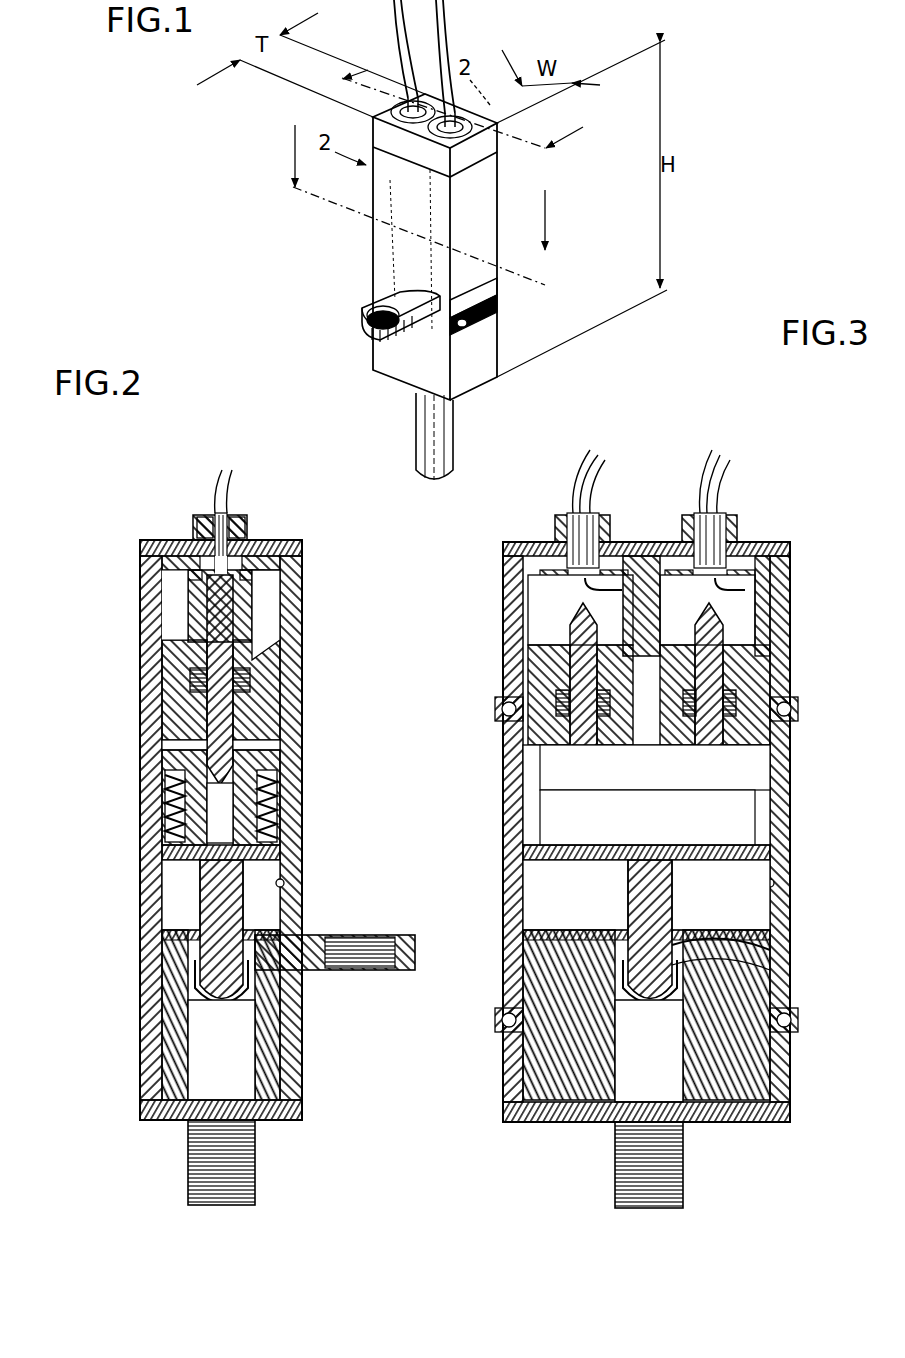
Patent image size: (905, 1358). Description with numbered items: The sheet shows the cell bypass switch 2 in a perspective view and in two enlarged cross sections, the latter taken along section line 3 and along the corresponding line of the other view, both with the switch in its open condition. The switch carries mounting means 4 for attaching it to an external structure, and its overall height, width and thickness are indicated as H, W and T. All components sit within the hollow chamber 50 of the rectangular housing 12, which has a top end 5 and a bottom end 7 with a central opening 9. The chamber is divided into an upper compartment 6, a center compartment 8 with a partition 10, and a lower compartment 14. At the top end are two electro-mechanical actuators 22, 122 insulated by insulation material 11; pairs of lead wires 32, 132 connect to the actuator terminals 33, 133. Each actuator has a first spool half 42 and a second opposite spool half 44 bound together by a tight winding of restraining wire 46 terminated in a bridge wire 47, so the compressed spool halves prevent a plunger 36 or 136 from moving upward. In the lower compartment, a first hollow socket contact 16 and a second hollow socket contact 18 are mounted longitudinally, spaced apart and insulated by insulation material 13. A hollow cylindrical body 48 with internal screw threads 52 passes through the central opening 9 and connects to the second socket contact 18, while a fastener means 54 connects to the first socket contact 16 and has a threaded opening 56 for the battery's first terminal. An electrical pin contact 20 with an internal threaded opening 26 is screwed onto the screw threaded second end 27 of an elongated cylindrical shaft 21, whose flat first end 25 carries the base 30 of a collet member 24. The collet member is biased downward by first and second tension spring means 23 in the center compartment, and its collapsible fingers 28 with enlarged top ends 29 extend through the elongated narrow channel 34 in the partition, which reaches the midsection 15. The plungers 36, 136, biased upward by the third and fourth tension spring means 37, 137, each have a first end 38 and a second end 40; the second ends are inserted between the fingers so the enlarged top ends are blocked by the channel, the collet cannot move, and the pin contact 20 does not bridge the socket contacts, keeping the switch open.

In FIG. 1, the cell bypass switch 2 is at (296, 246).
In FIG. 2, the cell bypass switch 2 is at (190, 480).
In FIG. 3, the cell bypass switch 2 is at (812, 395).
In FIG. 1, the section line 3— 3 is at (468, 97).
In FIG. 1, the mounting means 4 is at (458, 340).
In FIG. 2, the top end 5 is at (252, 545).
In FIG. 3, the top end 5 is at (660, 545).
In FIG. 2, the upper compartment 6 is at (283, 590).
In FIG. 3, the upper compartment 6 is at (775, 590).
In FIG. 2, the bottom end 7 is at (285, 1122).
In FIG. 3, the bottom end 7 is at (775, 1122).
In FIG. 2, the center compartment 8 is at (165, 762).
In FIG. 3, the center compartment 8 is at (533, 805).
In FIG. 2, the central opening 9 is at (258, 1122).
In FIG. 3, the central opening 9 is at (688, 1125).
In FIG. 2, the partition 10 is at (270, 760).
In FIG. 3, the partition 10 is at (760, 812).
In FIG. 2, the insulation material 11 is at (175, 700).
In FIG. 3, the insulation material 11 is at (560, 695).
In FIG. 2, the housing 12 is at (304, 615).
In FIG. 3, the housing 12 is at (793, 612).
In FIG. 2, the insulation material 13 is at (290, 1065).
In FIG. 3, the insulation material 13 is at (540, 1085).
In FIG. 2, the lower compartment 14 is at (300, 883).
In FIG. 3, the lower compartment 14 is at (790, 880).
In FIG. 2, the midsection 15 is at (175, 835).
In FIG. 2, the first hollow socket contact 16 is at (180, 970).
In FIG. 3, the first hollow socket contact 16 is at (770, 960).
In FIG. 2, the second hollow socket contact 18 is at (180, 1065).
In FIG. 3, the second hollow socket contact 18 is at (760, 1050).
In FIG. 2, the electrical pin contact 20 is at (280, 985).
In FIG. 3, the electrical pin contact 20 is at (672, 1005).
In FIG. 2, the elongated cylindrical shaft 21 is at (200, 892).
In FIG. 3, the elongated cylindrical shaft 21 is at (665, 905).
In FIG. 2, the electro-mechanical actuator 22 is at (255, 518).
In FIG. 3, the electro-mechanical actuator 22 is at (612, 520).
In FIG. 2, the first and second tension spring means 23 is at (185, 800).
In FIG. 2, the collet member 24 is at (170, 828).
In FIG. 3, the collet member 24 is at (770, 835).
In FIG. 2, the flat first end 25 is at (170, 855).
In FIG. 3, the flat first end 25 is at (530, 855).
In FIG. 2, the internal threaded opening 26 is at (232, 1003).
In FIG. 3, the internal threaded opening 26 is at (640, 960).
In FIG. 2, the screw threaded second end 27 is at (232, 920).
In FIG. 3, the screw threaded second end 27 is at (670, 925).
In FIG. 2, the collapsible fingers 28 is at (221, 813).
In FIG. 3, the collapsible fingers 28 is at (630, 822).
In FIG. 3, the enlarged top ends 29 is at (560, 750).
In FIG. 2, the base 30 is at (275, 852).
In FIG. 3, the base 30 is at (720, 845).
In FIG. 2, the lead wires 32 is at (222, 495).
In FIG. 3, the lead wires 32 is at (588, 480).
In FIG. 2, the electro-mechanical actuator terminals 33 is at (205, 525).
In FIG. 3, the electro-mechanical actuator terminals 33 is at (562, 545).
In FIG. 2, the elongated narrow channel 34 is at (170, 785).
In FIG. 2, the plunger 36 is at (205, 660).
In FIG. 3, the plunger 36 is at (568, 665).
In FIG. 2, the third tension spring means 37 is at (255, 685).
In FIG. 3, the third tension spring means 37 is at (556, 708).
In FIG. 2, the first end 38 is at (188, 600).
In FIG. 3, the first end 38 is at (585, 605).
In FIG. 2, the second end 40 is at (190, 722).
In FIG. 3, the second end 40 is at (560, 775).
In FIG. 2, the first spool half 42 is at (192, 542).
In FIG. 3, the first spool half 42 is at (555, 548).
In FIG. 2, the second opposite spool half 44 is at (262, 555).
In FIG. 3, the second opposite spool half 44 is at (775, 600).
In FIG. 2, the restraining wire 46 is at (270, 572).
In FIG. 3, the restraining wire 46 is at (560, 550).
In FIG. 3, the bridge wire 47 is at (600, 510).
In FIG. 2, the hollow cylindrical body 48 is at (186, 1160).
In FIG. 3, the hollow cylindrical body 48 is at (612, 1160).
In FIG. 2, the hollow chamber 50 is at (189, 917).
In FIG. 3, the hollow chamber 50 is at (535, 899).
In FIG. 2, the internal screw threads 52 is at (195, 1180).
In FIG. 3, the internal screw threads 52 is at (620, 1180).
In FIG. 1, the fastener means 54 is at (360, 340).
In FIG. 2, the fastener means 54 is at (330, 940).
In FIG. 3, the fastener means 54 is at (730, 945).
In FIG. 1, the threaded opening 56 is at (385, 310).
In FIG. 2, the threaded opening 56 is at (355, 970).
In FIG. 3, the electro-mechanical actuator 122 is at (740, 522).
In FIG. 3, the lead wires 132 is at (720, 470).
In FIG. 3, the electro-mechanical actuator terminals 133 is at (700, 520).
In FIG. 3, the plunger 136 is at (745, 670).
In FIG. 3, the fourth tension spring means 137 is at (800, 710).